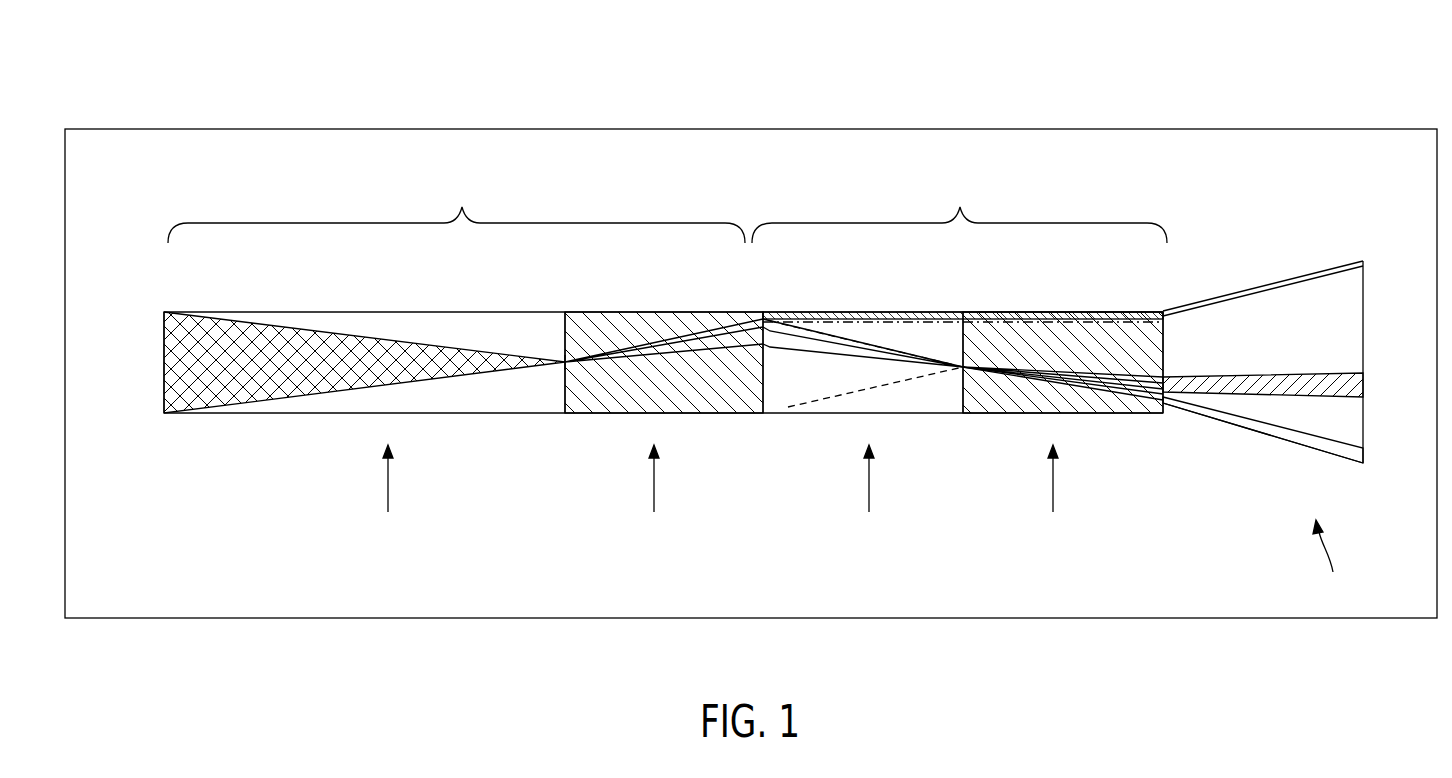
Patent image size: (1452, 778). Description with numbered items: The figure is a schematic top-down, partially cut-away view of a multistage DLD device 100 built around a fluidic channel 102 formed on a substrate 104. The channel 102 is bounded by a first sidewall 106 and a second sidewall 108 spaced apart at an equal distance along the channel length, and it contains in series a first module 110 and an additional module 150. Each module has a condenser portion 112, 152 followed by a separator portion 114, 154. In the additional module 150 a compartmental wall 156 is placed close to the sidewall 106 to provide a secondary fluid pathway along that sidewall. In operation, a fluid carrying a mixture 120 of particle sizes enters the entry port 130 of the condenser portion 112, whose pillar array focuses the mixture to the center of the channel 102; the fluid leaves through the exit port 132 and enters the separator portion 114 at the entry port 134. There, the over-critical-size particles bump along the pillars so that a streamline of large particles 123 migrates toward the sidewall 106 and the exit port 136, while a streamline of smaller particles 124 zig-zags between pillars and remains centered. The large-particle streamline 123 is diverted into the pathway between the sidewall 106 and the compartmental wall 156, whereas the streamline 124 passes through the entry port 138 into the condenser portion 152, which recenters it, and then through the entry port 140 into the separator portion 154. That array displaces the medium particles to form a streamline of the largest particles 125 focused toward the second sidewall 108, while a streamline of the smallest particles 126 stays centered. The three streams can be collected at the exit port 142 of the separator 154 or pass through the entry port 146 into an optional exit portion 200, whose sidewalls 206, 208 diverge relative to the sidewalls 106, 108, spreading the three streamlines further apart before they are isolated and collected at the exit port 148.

The multistage DLD device 100 is at (258, 104).
The fluidic channel 102 is at (150, 347).
The substrate 104 is at (1298, 128).
The first sidewall 106 is at (455, 312).
The second sidewall 108 is at (442, 412).
The first module 110 is at (456, 206).
The condenser portion 112 is at (388, 496).
The separator portion 114 is at (654, 496).
The mixture 120 is at (335, 368).
The streamline of large particles 123 is at (625, 325).
The streamline of smaller particles 124 is at (672, 342).
The streamline of the largest particles 125 is at (1196, 420).
The streamline of the smallest particles 126 is at (1120, 378).
The entry port 130 is at (163, 406).
The exit port 132 is at (568, 335).
The entry port 134 is at (565, 364).
The exit port 136 is at (758, 402).
The entry port 138 is at (772, 405).
The entry port 140 is at (968, 402).
The exit port 142 is at (1165, 345).
The entry port 146 is at (1162, 370).
The exit port 148 is at (1365, 315).
The additional module 150 is at (959, 208).
The condenser portion 152 is at (869, 496).
The separator portion 154 is at (1053, 496).
The compartmental wall 156 is at (1027, 320).
The exit portion 200 is at (1329, 561).
The sidewall 206 is at (1289, 279).
The sidewall 208 is at (1278, 442).